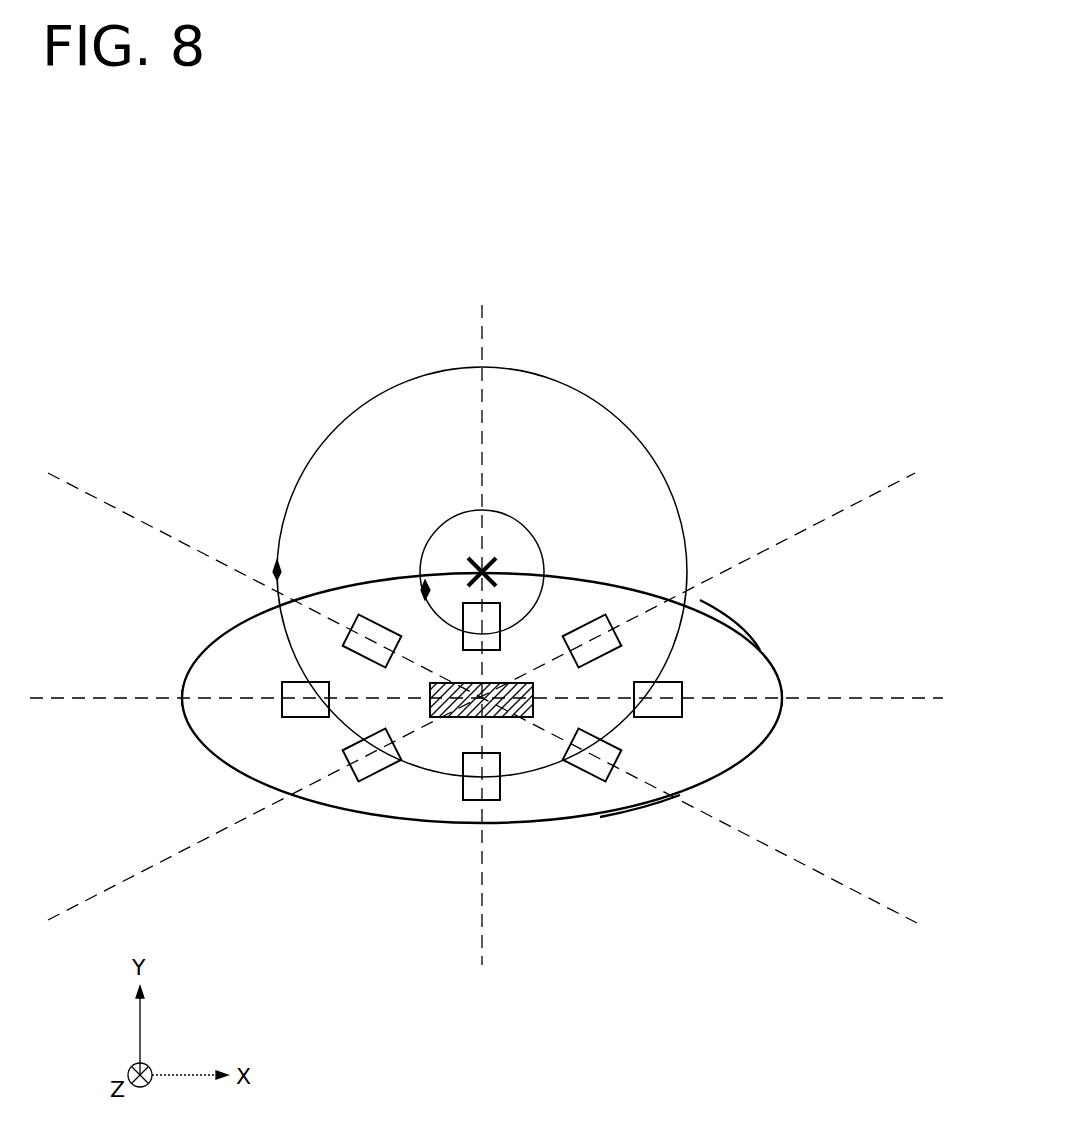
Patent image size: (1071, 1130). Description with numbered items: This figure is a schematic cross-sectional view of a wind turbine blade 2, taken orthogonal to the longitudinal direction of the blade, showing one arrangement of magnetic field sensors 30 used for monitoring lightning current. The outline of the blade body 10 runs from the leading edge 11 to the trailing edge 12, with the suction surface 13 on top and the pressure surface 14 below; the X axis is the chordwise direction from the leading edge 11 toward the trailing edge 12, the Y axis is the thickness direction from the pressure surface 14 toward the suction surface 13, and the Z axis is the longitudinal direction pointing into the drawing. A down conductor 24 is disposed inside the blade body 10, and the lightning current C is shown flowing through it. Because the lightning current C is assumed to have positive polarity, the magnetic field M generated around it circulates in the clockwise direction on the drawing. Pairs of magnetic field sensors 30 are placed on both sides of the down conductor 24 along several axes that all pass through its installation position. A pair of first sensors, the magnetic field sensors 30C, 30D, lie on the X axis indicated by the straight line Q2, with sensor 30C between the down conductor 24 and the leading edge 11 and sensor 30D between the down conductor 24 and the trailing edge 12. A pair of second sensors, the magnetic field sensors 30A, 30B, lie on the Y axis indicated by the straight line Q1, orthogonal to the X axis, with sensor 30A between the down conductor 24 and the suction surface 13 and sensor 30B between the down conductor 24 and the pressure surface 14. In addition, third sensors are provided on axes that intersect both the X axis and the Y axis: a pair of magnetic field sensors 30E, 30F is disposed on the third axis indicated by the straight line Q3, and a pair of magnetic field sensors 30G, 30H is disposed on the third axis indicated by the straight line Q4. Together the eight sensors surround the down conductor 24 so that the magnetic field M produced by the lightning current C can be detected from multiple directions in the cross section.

The wind turbine blade 2 is at (486, 632).
The blade body 10 is at (256, 617).
The leading edge 11 is at (182, 698).
The trailing edge 12 is at (783, 698).
The suction surface 13 is at (735, 628).
The pressure surface 14 is at (632, 810).
The down conductor 24 is at (489, 718).
The magnetic field sensor 30 is at (505, 707).
The magnetic field sensor 30A is at (500, 641).
The magnetic field sensor 30B is at (500, 793).
The magnetic field sensor 30C is at (307, 718).
The magnetic field sensor 30D is at (660, 718).
The magnetic field sensor 30E is at (612, 622).
The magnetic field sensor 30F is at (383, 778).
The magnetic field sensor 30G is at (582, 778).
The magnetic field sensor 30H is at (353, 618).
The straight line Q1 is at (482, 338).
The straight line Q2 is at (893, 698).
The straight line Q3 is at (864, 498).
The straight line Q4 is at (853, 890).
The magnetic field direction M is at (628, 422).
The lightning current C is at (466, 571).